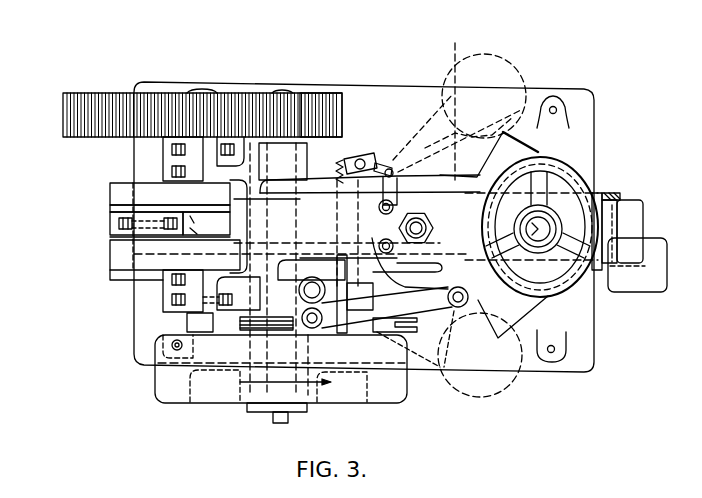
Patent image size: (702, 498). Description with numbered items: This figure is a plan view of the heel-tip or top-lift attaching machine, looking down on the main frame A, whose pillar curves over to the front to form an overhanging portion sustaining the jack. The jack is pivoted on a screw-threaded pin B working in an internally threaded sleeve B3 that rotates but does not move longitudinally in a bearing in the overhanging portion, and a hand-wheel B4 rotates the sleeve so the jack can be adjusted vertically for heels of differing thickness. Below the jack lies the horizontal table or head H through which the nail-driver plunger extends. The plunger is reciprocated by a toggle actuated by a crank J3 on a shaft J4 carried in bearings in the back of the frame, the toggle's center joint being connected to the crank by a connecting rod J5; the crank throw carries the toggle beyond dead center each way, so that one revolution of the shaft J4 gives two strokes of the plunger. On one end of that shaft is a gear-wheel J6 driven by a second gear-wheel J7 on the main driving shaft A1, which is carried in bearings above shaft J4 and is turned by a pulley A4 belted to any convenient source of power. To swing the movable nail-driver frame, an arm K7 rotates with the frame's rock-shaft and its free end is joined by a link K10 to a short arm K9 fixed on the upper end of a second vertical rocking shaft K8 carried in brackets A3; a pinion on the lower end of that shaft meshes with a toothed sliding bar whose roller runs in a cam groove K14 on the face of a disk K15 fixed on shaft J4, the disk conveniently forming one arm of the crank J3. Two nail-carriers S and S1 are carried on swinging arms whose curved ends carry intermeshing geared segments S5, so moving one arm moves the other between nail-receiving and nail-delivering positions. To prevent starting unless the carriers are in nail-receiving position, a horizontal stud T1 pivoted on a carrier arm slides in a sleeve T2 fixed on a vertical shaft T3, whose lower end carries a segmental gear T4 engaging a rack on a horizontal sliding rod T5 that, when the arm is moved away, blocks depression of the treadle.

The main frame A is at (366, 238).
The main driving shaft A1 is at (281, 92).
The brackets A3 is at (267, 322).
The pulley A4 is at (170, 373).
The crank J3 is at (110, 194).
The shaft J4 is at (200, 92).
The connecting rod J5 is at (220, 227).
The gear-wheel J6 is at (155, 103).
The second gear-wheel J7 is at (314, 110).
The arm K7 is at (528, 316).
The second vertical rocking shaft K8 is at (335, 335).
The short arm K9 is at (300, 300).
The link K10 is at (400, 320).
The cam groove K14 is at (165, 273).
The disk K15 is at (182, 260).
The horizontal stud T1 is at (392, 165).
The sleeve T2 is at (360, 160).
The vertical shaft T3 is at (380, 168).
The segmental gear T4 is at (347, 162).
The horizontal sliding rod T5 is at (330, 221).
The nail-carrier S is at (508, 72).
The nail-carrier S1 is at (508, 389).
The geared segments S5 is at (390, 240).
The screw-threaded pin B is at (578, 216).
The internally threaded sleeve B3 is at (540, 210).
The hand-wheel B4 is at (575, 197).
The table H is at (488, 289).